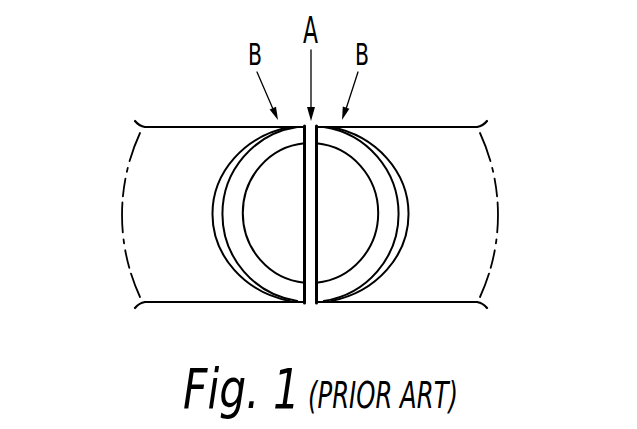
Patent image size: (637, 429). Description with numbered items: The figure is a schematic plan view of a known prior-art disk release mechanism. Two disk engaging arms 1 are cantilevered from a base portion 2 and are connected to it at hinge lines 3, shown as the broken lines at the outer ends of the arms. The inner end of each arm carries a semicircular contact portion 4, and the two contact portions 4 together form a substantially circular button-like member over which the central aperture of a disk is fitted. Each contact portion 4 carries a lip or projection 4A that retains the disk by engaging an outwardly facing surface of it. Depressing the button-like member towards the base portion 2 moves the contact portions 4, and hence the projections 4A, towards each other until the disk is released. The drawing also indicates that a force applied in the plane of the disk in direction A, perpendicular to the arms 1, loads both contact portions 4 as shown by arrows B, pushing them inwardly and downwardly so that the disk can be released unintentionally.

The disk engaging arm 1 is at (155, 162).
The base portion 2 is at (52, 232).
The hinge line 3 is at (128, 268).
The semicircular contact portion 4 is at (266, 235).
The lip or projection 4A is at (213, 213).